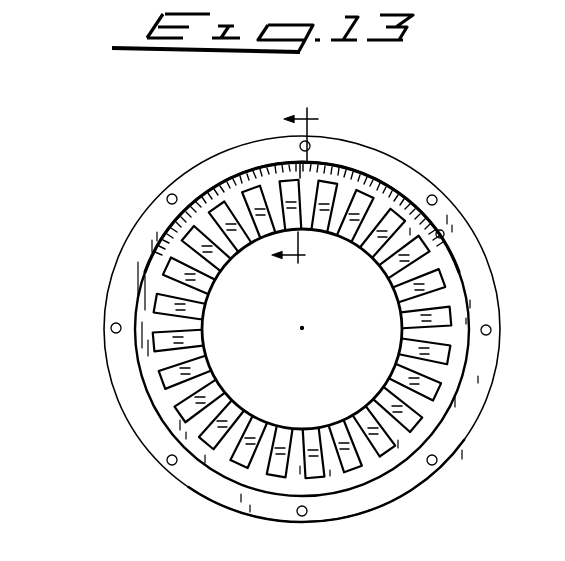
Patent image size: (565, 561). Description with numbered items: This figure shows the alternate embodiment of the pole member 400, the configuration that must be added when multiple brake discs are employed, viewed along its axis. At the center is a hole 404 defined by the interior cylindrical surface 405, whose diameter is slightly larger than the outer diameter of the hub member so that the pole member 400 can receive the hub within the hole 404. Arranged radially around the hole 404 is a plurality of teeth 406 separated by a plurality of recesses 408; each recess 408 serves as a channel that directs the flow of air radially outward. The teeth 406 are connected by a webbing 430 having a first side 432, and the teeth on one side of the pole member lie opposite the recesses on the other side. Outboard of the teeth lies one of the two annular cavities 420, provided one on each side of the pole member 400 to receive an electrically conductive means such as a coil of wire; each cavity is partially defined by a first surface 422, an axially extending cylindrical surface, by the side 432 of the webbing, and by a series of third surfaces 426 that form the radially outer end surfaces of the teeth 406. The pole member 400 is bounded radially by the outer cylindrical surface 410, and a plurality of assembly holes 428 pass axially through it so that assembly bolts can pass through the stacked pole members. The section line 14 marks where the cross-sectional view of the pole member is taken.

The pole member 400 is at (192, 147).
The hole 404 is at (318, 371).
The interior cylindrical surface 405 is at (398, 311).
The teeth 406 is at (220, 255).
The recesses 408 is at (200, 324).
The outer cylindrical surface 410 is at (119, 266).
The annular cavities 420 is at (382, 192).
The first surface 422 is at (445, 232).
The third surfaces 426 is at (462, 270).
The assembly holes 428 is at (170, 194).
The webbing 430 is at (163, 288).
The first side of webbing 432 is at (462, 300).
The section line 14 is at (314, 188).